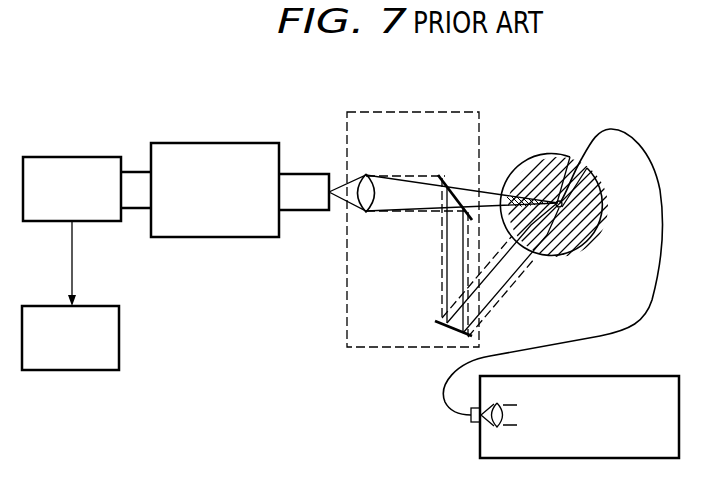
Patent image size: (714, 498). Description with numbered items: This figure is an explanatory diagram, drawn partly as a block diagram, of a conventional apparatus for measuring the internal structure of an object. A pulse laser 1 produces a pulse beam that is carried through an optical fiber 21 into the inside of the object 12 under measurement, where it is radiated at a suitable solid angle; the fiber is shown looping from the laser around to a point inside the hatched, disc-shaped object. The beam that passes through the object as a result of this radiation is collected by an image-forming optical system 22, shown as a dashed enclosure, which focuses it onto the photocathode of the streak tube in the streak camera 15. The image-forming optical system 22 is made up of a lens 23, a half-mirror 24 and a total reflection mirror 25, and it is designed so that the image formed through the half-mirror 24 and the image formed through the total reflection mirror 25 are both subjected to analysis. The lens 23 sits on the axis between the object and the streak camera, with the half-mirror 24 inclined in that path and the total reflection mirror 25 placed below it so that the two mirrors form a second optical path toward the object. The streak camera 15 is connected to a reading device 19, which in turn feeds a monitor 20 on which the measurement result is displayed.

The pulse laser 1 is at (632, 376).
The object under measurement 12 is at (601, 248).
The streak camera 15 is at (227, 143).
The reading device 19 is at (72, 154).
The monitor 20 is at (120, 335).
The optical fiber 21 is at (640, 154).
The image forming optical system 22 is at (460, 112).
The lens 23 is at (366, 213).
The half-mirror 24 is at (446, 174).
The total reflection mirror 25 is at (431, 326).